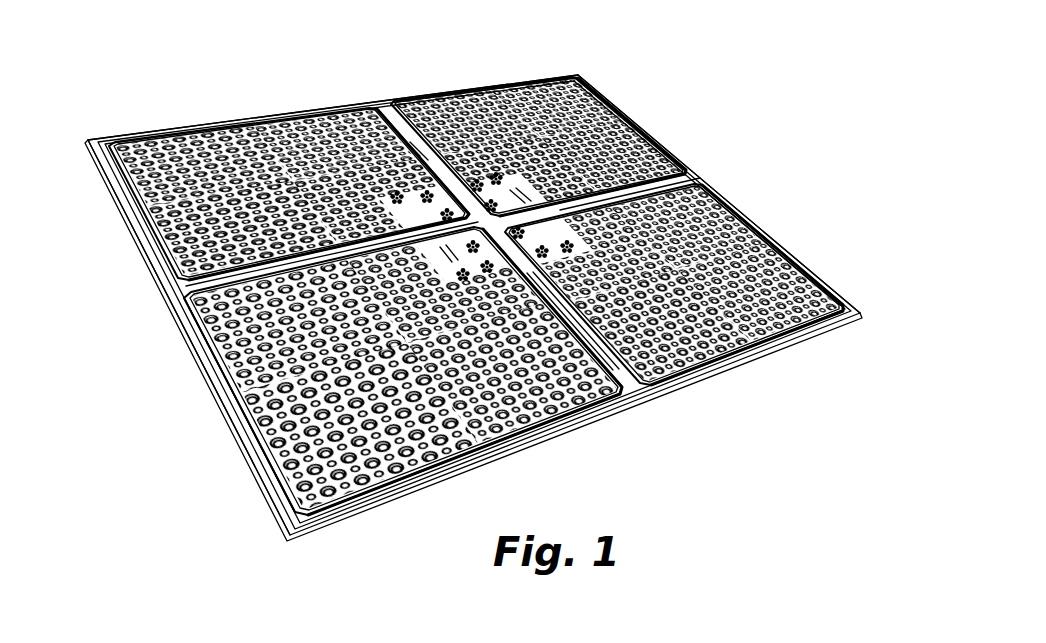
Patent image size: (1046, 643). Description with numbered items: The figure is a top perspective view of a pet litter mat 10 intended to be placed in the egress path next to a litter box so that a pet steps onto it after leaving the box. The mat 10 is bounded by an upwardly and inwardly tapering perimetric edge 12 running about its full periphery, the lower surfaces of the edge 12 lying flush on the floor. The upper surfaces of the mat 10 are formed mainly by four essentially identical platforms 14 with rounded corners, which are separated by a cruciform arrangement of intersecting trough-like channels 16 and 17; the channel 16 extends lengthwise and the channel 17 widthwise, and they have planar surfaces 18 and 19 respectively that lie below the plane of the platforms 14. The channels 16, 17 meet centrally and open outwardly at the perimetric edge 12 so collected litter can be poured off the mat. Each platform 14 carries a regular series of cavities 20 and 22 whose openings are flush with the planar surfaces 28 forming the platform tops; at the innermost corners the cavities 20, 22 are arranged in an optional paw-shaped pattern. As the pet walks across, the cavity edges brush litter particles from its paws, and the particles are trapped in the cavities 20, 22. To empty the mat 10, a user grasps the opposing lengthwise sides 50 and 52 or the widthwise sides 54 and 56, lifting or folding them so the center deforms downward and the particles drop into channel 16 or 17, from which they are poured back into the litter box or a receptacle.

The litter mat 10 is at (733, 49).
The perimetric edge 12 is at (794, 357).
The platform 14 is at (640, 117).
The channel 16 is at (182, 292).
The channel 17 is at (632, 388).
The planar surface 18 is at (646, 183).
The planar surface 19 is at (377, 112).
The cavity 20 is at (365, 488).
The cavity 22 is at (313, 507).
The planar surface 28 is at (250, 419).
The lengthwise side 50 is at (413, 497).
The lengthwise side 52 is at (290, 111).
The widthwise side 54 is at (125, 208).
The widthwise side 56 is at (811, 270).